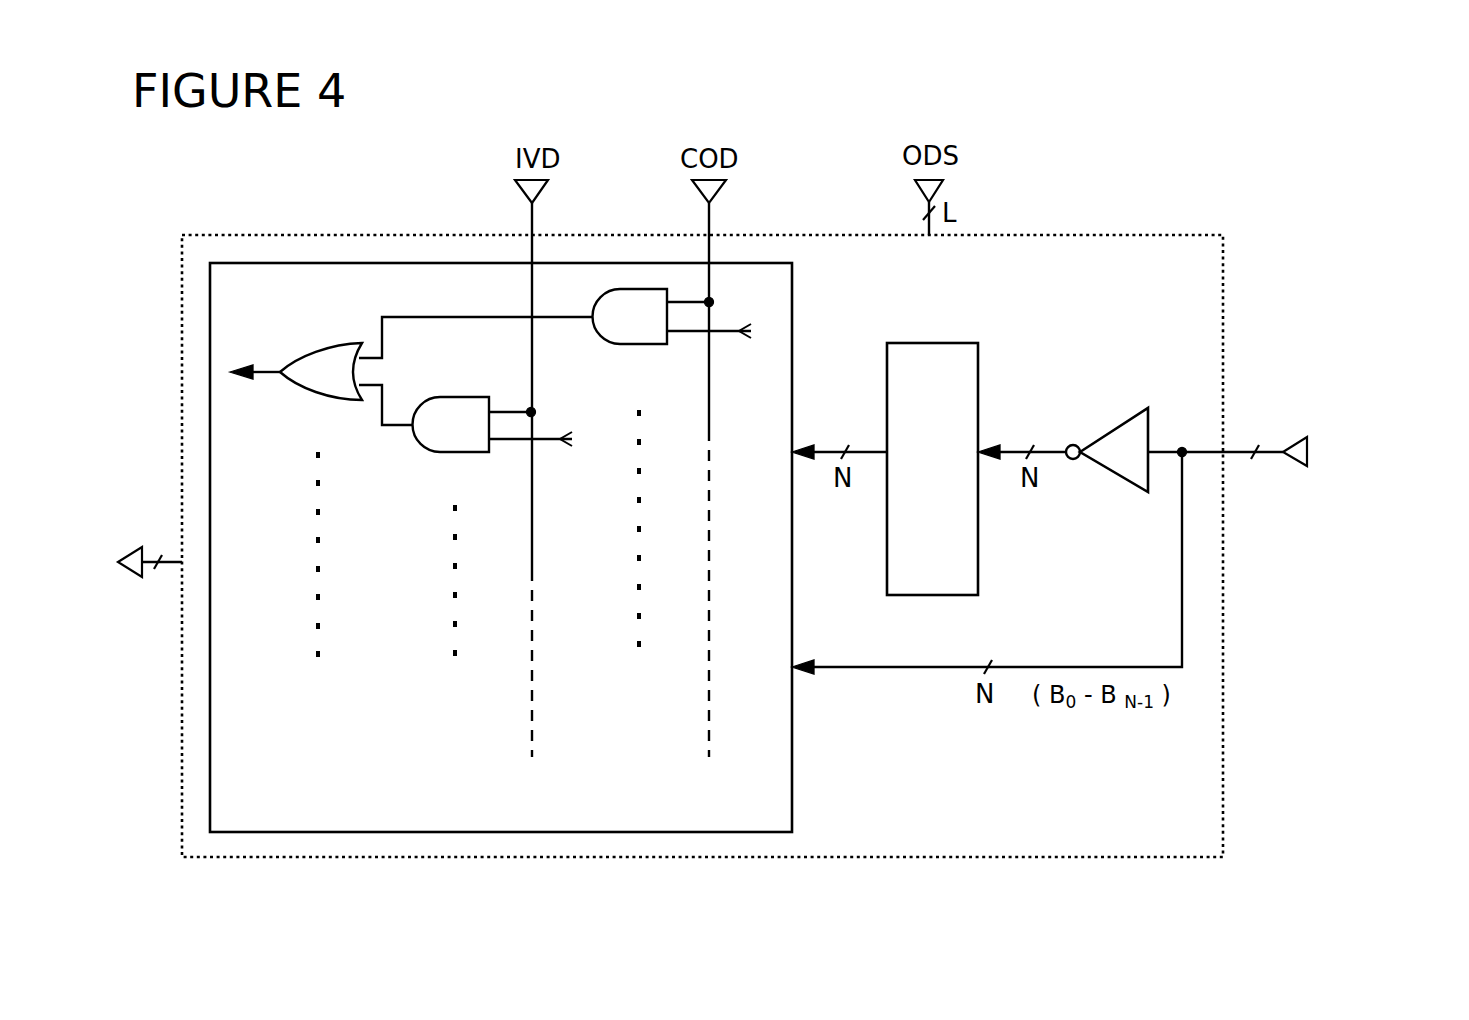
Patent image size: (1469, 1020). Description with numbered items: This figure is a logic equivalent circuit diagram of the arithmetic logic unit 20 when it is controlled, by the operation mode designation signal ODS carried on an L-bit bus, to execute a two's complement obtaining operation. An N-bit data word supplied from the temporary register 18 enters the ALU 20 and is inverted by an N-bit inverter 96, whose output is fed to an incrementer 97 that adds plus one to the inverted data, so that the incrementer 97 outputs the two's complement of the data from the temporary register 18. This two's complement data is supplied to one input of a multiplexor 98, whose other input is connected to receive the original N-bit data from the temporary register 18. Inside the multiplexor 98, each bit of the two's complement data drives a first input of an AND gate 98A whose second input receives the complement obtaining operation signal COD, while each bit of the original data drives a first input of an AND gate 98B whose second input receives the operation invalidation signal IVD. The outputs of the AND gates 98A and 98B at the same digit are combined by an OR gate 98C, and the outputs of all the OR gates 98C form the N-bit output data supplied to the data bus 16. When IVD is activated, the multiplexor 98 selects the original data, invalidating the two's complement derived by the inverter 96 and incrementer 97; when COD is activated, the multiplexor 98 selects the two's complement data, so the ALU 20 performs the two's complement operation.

The arithmetic logic unit (ALU) 20 is at (1223, 731).
The multiplexor 98 is at (792, 737).
The AND gate 98A is at (625, 344).
The AND gate 98B is at (455, 452).
The OR gate 98C is at (343, 347).
The incrementer 97 is at (920, 343).
The N-bit inverter 96 is at (1108, 425).
The temporary register set 18 is at (1296, 499).
The data bus 16 is at (115, 542).